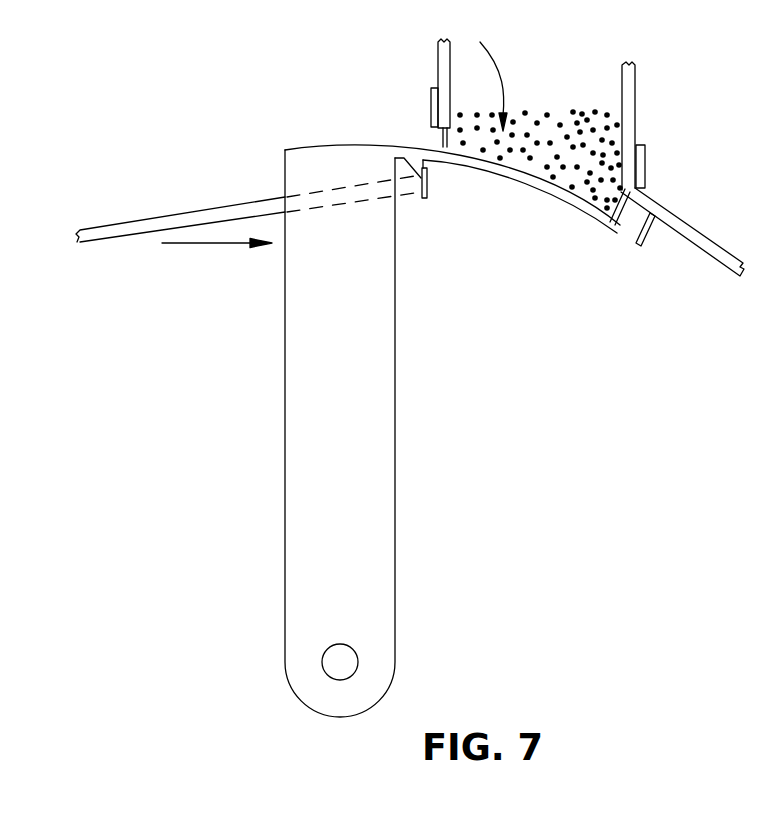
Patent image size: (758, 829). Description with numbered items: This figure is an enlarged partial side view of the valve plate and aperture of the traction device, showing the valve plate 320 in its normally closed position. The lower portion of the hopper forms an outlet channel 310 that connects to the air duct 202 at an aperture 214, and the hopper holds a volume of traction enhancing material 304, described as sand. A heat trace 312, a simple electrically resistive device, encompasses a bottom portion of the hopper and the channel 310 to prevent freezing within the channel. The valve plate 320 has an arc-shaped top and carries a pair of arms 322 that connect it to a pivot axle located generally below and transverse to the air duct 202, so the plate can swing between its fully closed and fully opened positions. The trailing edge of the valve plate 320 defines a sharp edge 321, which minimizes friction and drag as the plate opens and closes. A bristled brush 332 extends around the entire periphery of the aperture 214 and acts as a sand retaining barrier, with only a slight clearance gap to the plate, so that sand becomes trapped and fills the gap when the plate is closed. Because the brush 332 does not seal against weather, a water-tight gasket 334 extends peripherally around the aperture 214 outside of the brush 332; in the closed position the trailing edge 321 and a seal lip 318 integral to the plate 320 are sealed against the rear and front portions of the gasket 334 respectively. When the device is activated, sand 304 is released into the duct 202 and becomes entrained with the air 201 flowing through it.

The air 201 is at (220, 245).
The air duct 202 is at (110, 220).
The aperture 214 is at (486, 74).
The traction enhancing material 304 is at (558, 110).
The outlet channel 310 is at (637, 97).
The heat trace 312 is at (432, 108).
The seal lip 318 is at (353, 652).
The valve plate 320 is at (525, 182).
The sharp edge 321 is at (627, 239).
The arms 322 is at (395, 412).
The bristled brush 332 is at (440, 140).
The water-tight gasket 334 is at (428, 180).